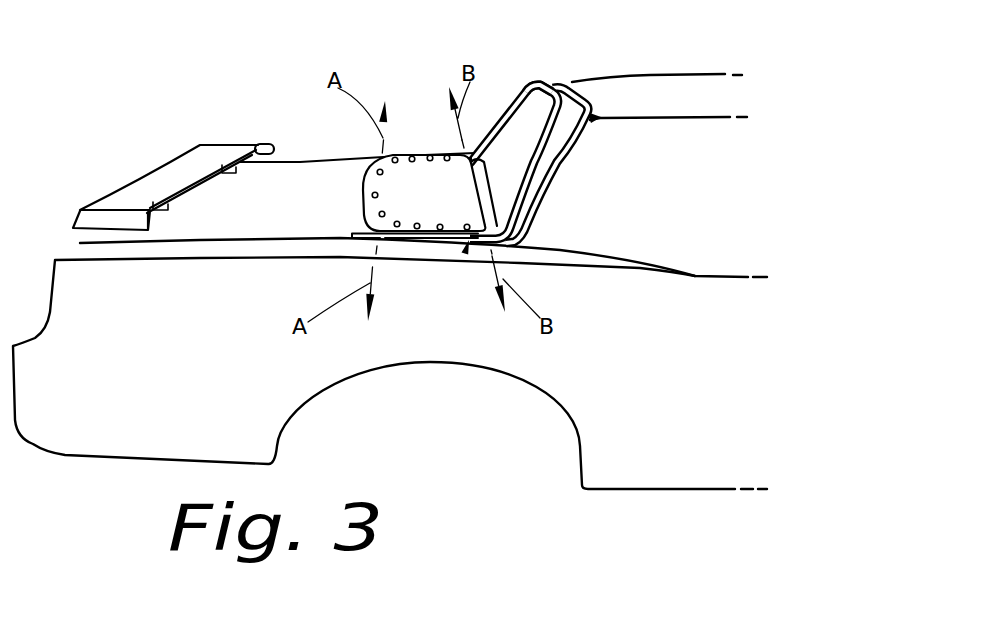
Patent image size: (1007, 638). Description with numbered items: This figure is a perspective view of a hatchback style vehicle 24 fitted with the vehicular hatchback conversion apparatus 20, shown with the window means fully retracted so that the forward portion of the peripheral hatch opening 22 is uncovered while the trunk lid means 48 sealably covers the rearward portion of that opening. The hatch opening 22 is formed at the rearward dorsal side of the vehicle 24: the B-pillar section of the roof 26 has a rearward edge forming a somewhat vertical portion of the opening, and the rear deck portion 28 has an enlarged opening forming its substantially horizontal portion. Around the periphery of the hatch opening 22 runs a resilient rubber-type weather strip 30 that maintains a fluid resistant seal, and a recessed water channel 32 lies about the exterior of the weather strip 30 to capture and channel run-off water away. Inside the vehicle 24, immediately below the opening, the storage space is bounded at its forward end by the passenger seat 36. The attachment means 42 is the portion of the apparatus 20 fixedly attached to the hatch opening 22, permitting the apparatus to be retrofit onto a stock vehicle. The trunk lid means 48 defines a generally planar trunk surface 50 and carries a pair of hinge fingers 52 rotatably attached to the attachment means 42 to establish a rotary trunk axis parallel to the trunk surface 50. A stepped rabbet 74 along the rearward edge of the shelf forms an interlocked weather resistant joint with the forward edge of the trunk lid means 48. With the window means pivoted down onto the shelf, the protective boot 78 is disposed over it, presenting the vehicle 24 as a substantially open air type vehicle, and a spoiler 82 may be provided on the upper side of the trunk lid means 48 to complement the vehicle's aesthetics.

The vehicular hatchback conversion apparatus 20 is at (437, 163).
The peripheral hatch opening 22 is at (507, 110).
The hatchback style vehicle 24 is at (698, 72).
The roof 26 is at (618, 128).
The rear deck portion 28 is at (83, 253).
The weather strip 30 is at (547, 77).
The water channel 32 is at (557, 80).
The passenger seat 36 is at (487, 192).
The attachment means 42 is at (466, 248).
The trunk lid means 48 is at (283, 166).
The trunk surface 50 is at (212, 224).
The hinge fingers 52 is at (350, 233).
The stepped rabbet 74 is at (363, 202).
The protective boot 78 is at (438, 157).
The spoiler 82 is at (200, 152).